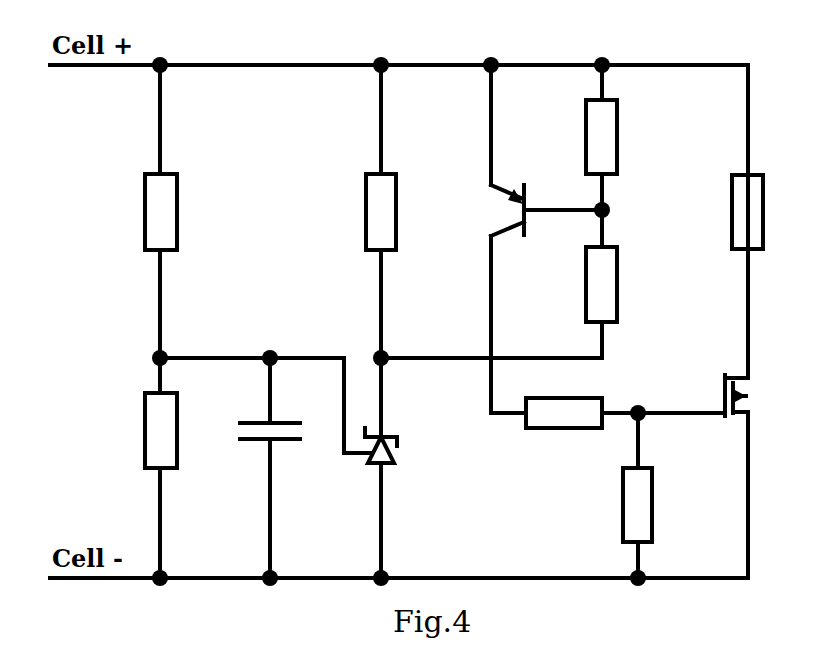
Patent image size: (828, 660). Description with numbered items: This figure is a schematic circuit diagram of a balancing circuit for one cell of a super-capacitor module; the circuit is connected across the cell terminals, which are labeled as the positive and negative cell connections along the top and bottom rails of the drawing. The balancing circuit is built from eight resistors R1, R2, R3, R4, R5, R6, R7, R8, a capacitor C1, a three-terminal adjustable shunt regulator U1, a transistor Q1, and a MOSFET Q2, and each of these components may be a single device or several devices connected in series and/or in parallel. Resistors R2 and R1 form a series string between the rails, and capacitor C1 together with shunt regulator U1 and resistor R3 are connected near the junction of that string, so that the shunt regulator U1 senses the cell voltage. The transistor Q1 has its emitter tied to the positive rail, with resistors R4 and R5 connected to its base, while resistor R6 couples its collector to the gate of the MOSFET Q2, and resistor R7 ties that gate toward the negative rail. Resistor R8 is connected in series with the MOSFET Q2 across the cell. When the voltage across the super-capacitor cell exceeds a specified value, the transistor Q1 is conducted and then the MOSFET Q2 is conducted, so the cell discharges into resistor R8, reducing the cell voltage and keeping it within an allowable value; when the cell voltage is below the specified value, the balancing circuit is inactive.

The resistor R1 is at (181, 468).
The resistor R2 is at (181, 211).
The resistor R3 is at (402, 211).
The resistor R4 is at (622, 137).
The resistor R5 is at (621, 284).
The resistor R6 is at (625, 396).
The resistor R7 is at (659, 495).
The resistor R8 is at (768, 212).
The capacitor C1 is at (289, 468).
The three-terminal adjustable shunt regulator U1 is at (404, 468).
The transistor Q1 is at (546, 239).
The MOSFET Q2 is at (717, 387).